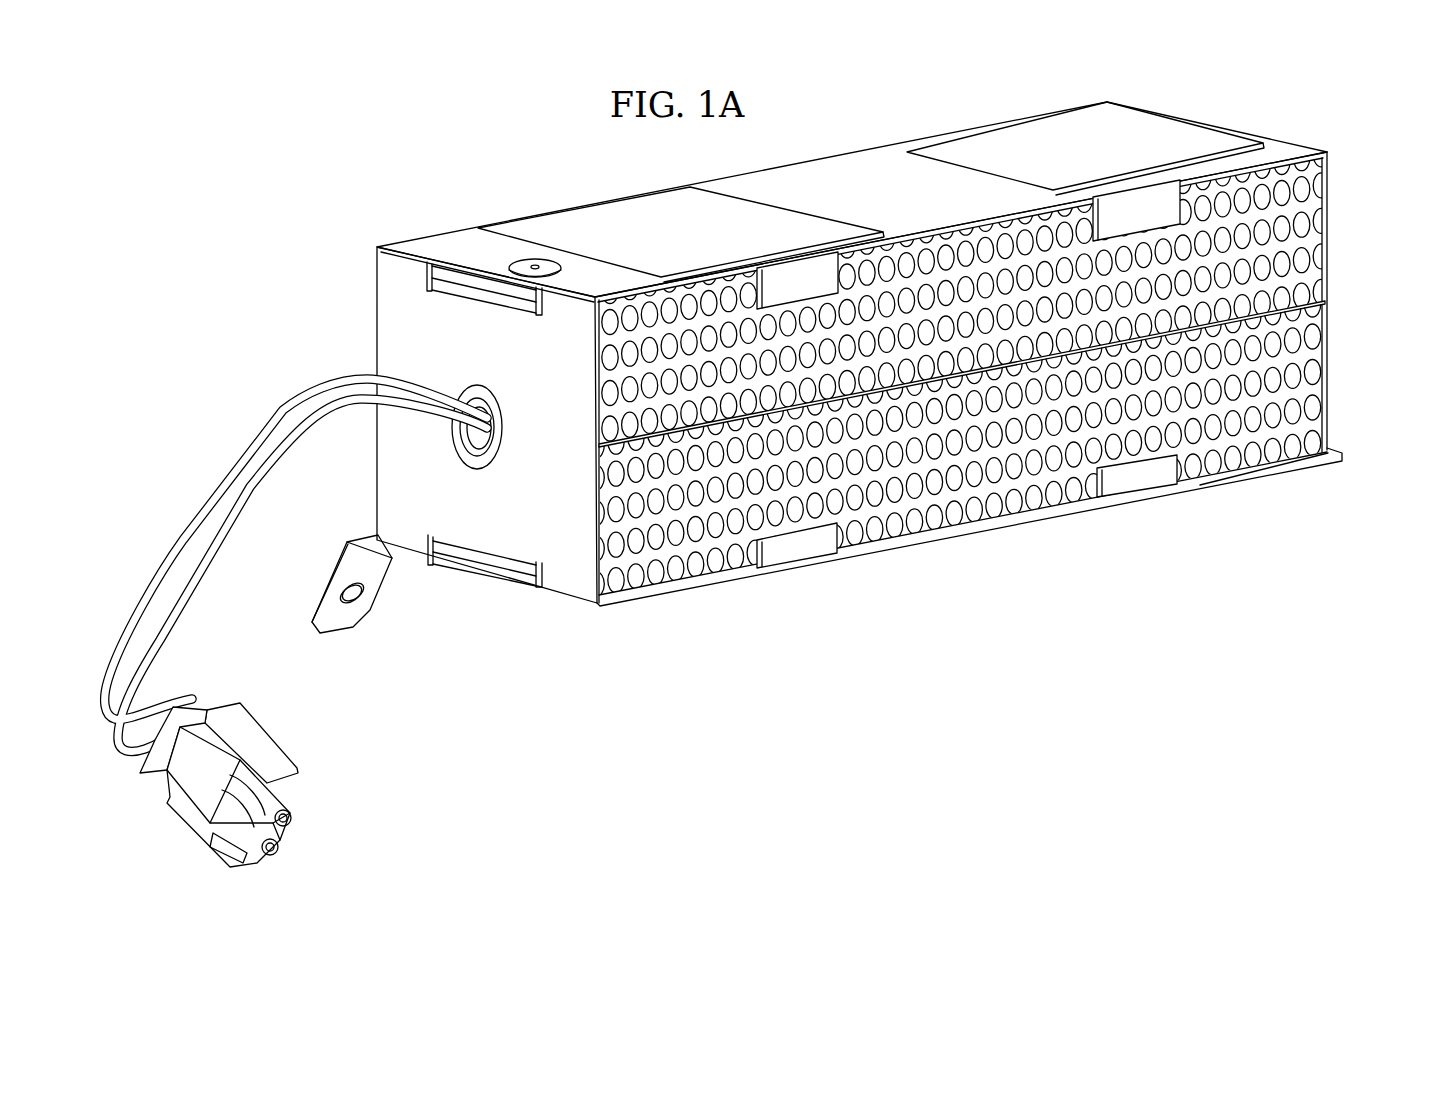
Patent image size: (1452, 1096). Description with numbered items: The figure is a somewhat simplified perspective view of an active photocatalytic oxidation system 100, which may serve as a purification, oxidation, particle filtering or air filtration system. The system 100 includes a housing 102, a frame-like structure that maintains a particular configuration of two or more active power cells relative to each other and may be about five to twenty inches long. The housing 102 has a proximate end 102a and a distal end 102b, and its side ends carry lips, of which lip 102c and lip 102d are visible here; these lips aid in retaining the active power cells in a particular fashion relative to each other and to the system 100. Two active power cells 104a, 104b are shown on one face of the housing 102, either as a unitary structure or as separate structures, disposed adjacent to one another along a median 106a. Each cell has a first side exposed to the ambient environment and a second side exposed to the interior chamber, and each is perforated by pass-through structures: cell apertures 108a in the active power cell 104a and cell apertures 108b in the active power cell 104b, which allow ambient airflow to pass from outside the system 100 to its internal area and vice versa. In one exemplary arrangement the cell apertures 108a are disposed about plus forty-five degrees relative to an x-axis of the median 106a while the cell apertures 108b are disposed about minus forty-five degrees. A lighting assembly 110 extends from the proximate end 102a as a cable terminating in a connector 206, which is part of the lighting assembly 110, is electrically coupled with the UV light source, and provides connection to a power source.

The system 100 is at (460, 125).
The housing 102 is at (1287, 137).
The proximate end 102a is at (452, 361).
The distal end 102b is at (1330, 181).
The lip 102c is at (776, 287).
The lip 102d is at (796, 563).
The active power cell 104a is at (1310, 281).
The active power cell 104b is at (1307, 393).
The median 106a is at (1318, 302).
The cell apertures 108a is at (1300, 227).
The cell apertures 108b is at (1310, 373).
The lighting assembly 110 is at (253, 400).
The connector 206 is at (197, 822).